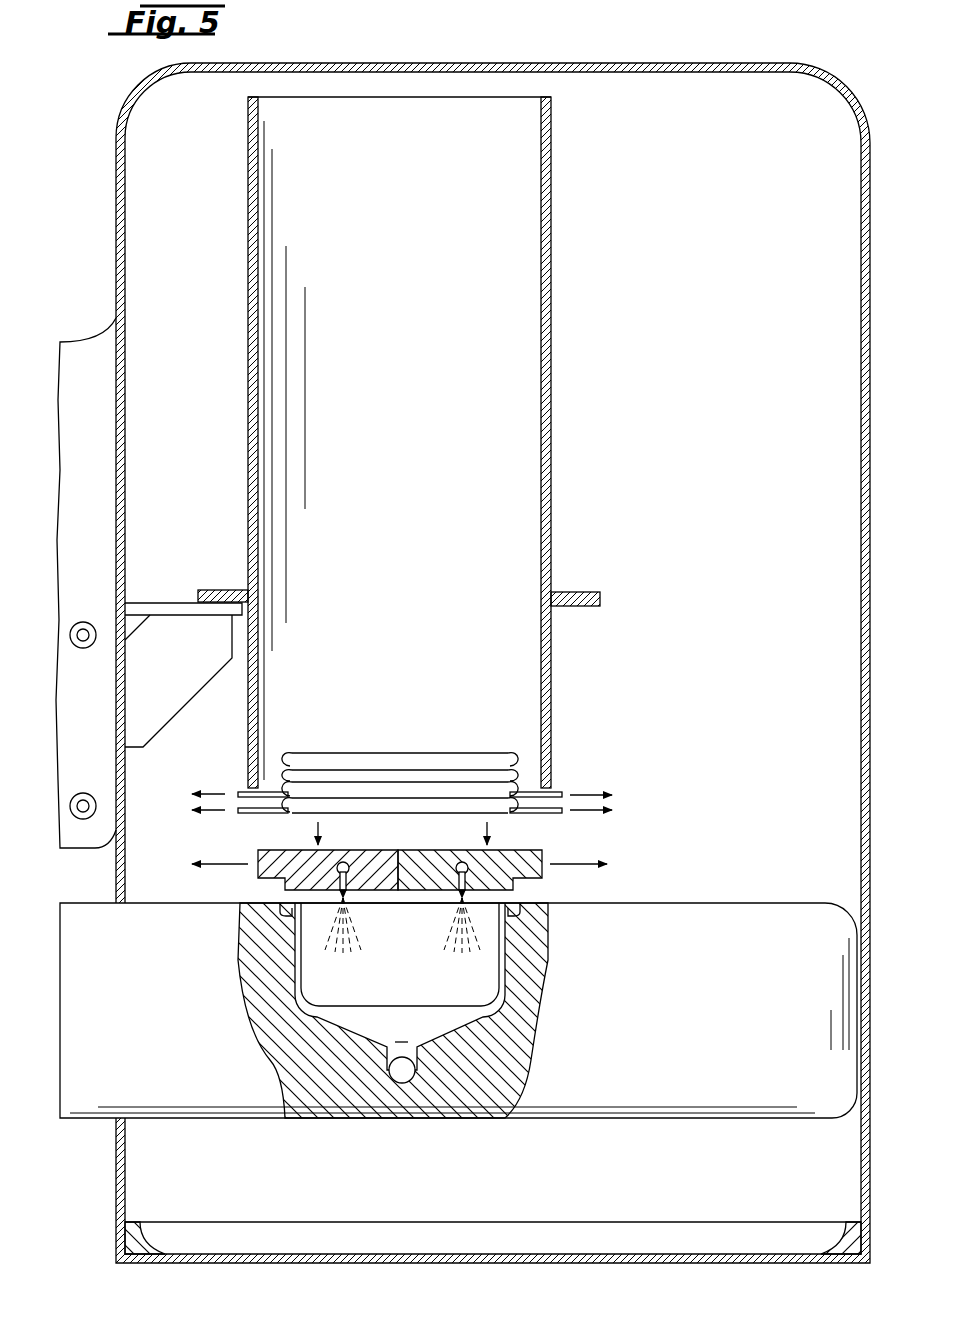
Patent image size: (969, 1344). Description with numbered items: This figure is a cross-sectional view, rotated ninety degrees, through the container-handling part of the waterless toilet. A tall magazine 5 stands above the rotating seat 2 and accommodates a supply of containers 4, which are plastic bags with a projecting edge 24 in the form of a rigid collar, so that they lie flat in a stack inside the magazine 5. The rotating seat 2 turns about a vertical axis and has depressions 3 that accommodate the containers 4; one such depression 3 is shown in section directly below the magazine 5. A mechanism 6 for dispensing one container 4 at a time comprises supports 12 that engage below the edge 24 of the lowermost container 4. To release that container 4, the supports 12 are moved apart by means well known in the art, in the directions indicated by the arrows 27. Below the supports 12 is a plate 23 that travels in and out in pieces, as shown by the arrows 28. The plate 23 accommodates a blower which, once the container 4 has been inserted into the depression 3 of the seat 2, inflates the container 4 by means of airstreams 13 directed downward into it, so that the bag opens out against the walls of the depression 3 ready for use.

The rotating seat 2 is at (694, 1011).
The depression 3 is at (455, 1025).
The container 4 is at (355, 762).
The magazine 5 is at (548, 470).
The dispensing mechanism 6 is at (630, 797).
The support 12 is at (262, 818).
The airstream 13 is at (445, 930).
The plate 23 is at (540, 878).
The edge 24 is at (516, 757).
The arrow 27 is at (212, 790).
The arrow 28 is at (225, 864).